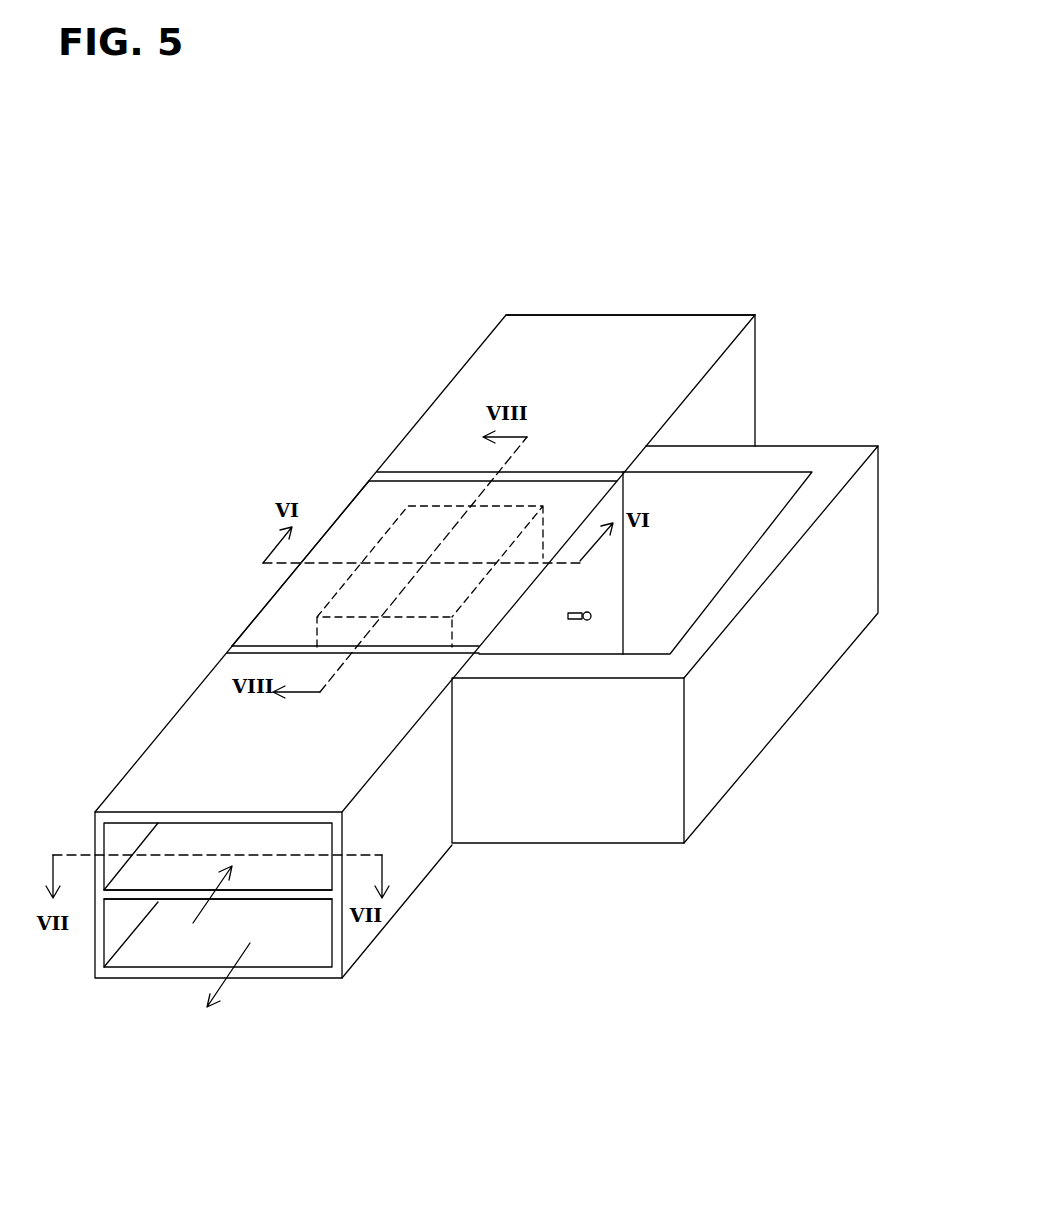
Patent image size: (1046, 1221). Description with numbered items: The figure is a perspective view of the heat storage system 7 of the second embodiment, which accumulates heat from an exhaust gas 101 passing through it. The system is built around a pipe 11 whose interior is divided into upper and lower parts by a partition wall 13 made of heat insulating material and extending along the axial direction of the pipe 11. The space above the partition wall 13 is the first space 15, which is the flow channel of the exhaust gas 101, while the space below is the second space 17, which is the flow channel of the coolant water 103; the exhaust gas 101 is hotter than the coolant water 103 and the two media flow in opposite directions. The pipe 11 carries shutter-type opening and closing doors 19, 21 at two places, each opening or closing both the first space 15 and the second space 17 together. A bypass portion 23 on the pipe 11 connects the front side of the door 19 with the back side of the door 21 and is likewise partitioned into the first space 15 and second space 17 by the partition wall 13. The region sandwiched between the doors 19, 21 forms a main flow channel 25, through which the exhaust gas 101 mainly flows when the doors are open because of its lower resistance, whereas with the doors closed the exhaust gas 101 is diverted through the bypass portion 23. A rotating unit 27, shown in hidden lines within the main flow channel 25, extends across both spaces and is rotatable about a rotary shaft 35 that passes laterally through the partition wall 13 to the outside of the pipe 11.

The heat storage system 7 is at (806, 285).
The pipe 11 is at (195, 728).
The partition wall 13 is at (176, 893).
The first space 15 is at (287, 840).
The second space 17 is at (287, 933).
The opening and closing door 19 is at (267, 648).
The opening and closing door 21 is at (410, 477).
The bypass portion 23 is at (803, 672).
The main flow channel 25 is at (297, 608).
The rotating unit 27 is at (402, 543).
The rotary shaft 35 is at (591, 618).
The exhaust gas 101 is at (208, 912).
The coolant water 103 is at (225, 988).